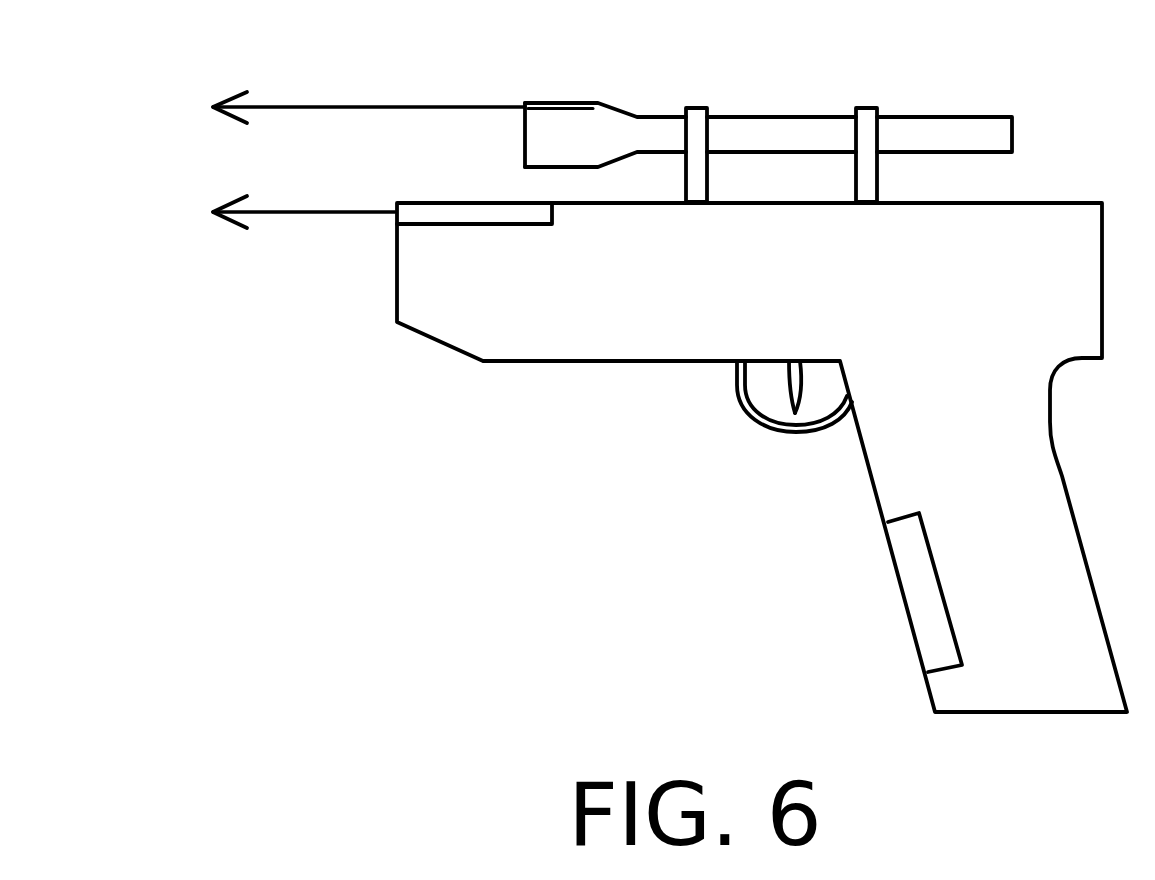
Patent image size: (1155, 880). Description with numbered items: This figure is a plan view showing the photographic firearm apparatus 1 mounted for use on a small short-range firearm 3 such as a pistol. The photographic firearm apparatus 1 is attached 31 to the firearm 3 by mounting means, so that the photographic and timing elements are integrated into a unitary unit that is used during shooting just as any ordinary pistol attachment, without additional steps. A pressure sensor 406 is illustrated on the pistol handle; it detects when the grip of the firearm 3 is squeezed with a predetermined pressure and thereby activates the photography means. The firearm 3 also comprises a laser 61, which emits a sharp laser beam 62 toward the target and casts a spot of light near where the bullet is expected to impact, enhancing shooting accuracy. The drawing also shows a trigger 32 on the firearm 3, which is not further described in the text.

The photographic firearm apparatus 1 is at (571, 153).
The firearm 3 is at (750, 298).
The attachment 31 is at (865, 143).
The trigger 32 is at (793, 380).
The laser 61 is at (547, 110).
The laser beam 62 is at (372, 108).
The pressure sensor 406 is at (928, 600).